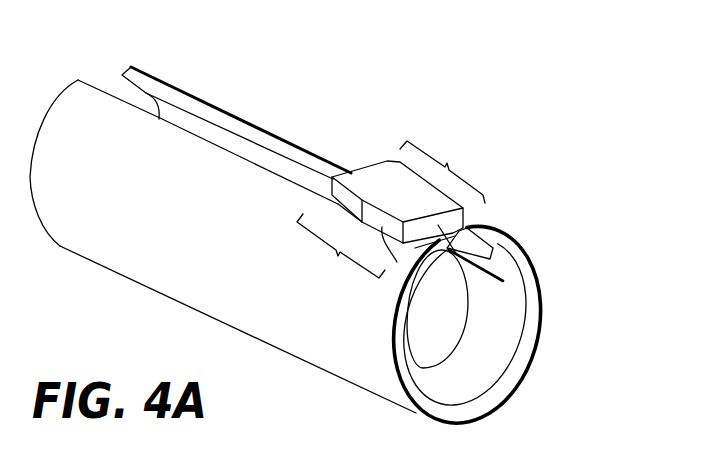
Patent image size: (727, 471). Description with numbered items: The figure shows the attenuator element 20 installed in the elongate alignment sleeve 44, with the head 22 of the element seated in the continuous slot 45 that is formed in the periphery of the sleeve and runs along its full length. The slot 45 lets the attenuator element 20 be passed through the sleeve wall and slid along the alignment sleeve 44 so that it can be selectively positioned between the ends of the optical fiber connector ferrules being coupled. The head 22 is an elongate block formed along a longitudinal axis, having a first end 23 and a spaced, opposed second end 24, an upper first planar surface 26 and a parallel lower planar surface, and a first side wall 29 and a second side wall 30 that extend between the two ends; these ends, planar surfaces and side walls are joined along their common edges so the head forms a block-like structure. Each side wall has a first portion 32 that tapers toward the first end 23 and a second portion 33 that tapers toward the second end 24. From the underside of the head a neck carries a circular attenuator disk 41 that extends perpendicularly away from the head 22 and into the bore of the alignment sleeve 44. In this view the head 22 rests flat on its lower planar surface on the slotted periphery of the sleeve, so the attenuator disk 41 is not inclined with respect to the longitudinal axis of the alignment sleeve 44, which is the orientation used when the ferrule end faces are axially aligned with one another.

The attenuator element 20 is at (493, 288).
The head 22 is at (398, 188).
The first end 23 is at (355, 168).
The second end 24 is at (483, 285).
The first planar surface 26 is at (406, 203).
The first side wall 29 is at (341, 250).
The second side wall 30 is at (442, 167).
The first portion 32 is at (353, 205).
The second portion 33 is at (383, 250).
The attenuator disk 41 is at (448, 336).
The alignment sleeve 44 is at (126, 213).
The slot 45 is at (110, 85).